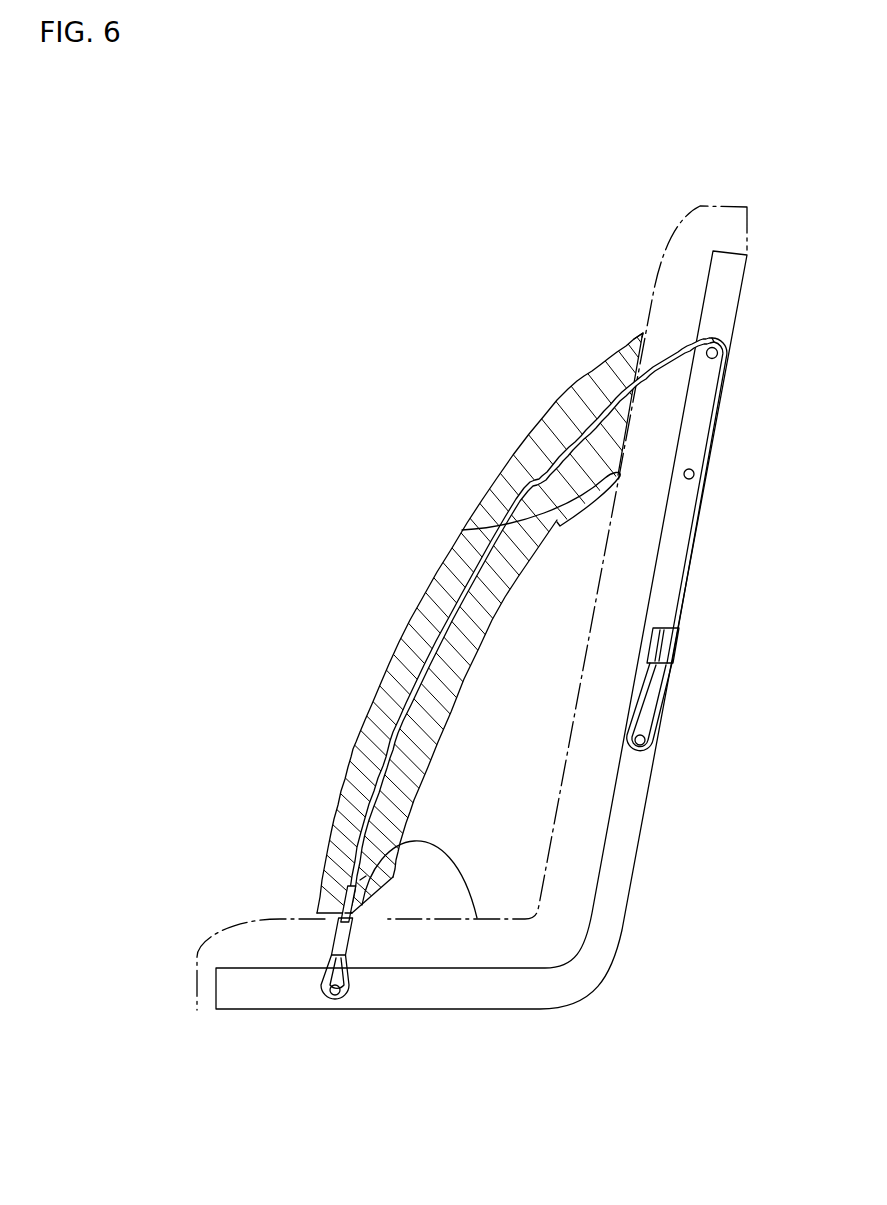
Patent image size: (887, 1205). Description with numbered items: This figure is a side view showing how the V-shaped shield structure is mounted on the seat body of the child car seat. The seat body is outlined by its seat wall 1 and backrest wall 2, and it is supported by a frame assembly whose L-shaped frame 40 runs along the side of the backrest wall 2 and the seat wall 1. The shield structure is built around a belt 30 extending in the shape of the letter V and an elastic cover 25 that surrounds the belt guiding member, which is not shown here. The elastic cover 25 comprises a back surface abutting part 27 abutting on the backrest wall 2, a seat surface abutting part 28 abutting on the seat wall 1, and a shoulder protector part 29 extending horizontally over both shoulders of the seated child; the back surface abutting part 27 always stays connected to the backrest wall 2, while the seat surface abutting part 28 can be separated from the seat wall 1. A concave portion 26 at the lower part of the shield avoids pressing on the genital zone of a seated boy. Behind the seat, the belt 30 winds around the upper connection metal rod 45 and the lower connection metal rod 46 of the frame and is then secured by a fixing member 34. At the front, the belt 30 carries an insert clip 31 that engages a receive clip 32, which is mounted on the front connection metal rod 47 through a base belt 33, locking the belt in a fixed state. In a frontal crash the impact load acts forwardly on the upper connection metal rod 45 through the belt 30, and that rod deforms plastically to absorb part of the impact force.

The seat wall 1 is at (402, 850).
The backrest wall 2 is at (560, 792).
The elastic cover 25 is at (434, 597).
The concave portion 26 is at (364, 878).
The back surface abutting part 27 is at (645, 348).
The seat surface abutting part 28 is at (333, 925).
The shoulder protector part 29 is at (462, 530).
The belt 30 is at (553, 460).
The insert clip 31 is at (360, 892).
The receive clip 32 is at (353, 947).
The base belt 33 is at (348, 978).
The fixing member 34 is at (679, 648).
The L-shaped frame 40 is at (635, 784).
The upper connection metal rod 45 is at (728, 363).
The lower connection metal rod 46 is at (655, 744).
The front connection metal rod 47 is at (335, 997).